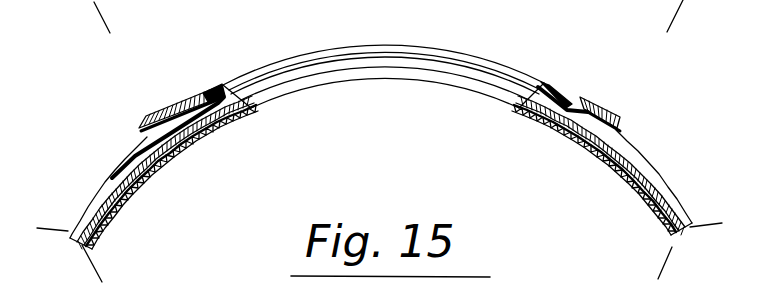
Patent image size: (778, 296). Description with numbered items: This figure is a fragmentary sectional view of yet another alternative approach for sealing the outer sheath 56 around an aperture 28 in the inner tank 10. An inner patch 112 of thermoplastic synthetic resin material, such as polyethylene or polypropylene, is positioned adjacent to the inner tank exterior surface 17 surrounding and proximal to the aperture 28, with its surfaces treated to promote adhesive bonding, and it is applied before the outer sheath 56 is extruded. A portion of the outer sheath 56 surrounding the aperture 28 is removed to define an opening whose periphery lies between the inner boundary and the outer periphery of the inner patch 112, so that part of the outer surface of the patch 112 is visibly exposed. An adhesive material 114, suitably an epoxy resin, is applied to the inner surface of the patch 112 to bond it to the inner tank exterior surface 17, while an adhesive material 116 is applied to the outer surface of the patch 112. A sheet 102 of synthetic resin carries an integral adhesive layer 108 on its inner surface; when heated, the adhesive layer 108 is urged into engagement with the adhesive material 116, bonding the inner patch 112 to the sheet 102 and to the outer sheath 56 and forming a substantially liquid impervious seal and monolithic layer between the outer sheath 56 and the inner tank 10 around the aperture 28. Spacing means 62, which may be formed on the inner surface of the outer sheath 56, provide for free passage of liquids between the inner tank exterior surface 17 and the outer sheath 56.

The inner tank 10 is at (173, 147).
The inner tank exterior surface 17 is at (110, 177).
The aperture 28 is at (233, 102).
The outer sheath 56 is at (130, 148).
The spacing means 62 is at (140, 173).
The sheet 102 is at (157, 107).
The adhesive layer 108 is at (213, 84).
The inner patch 112 is at (196, 93).
The adhesive material 114 is at (157, 157).
The adhesive material 116 is at (147, 140).